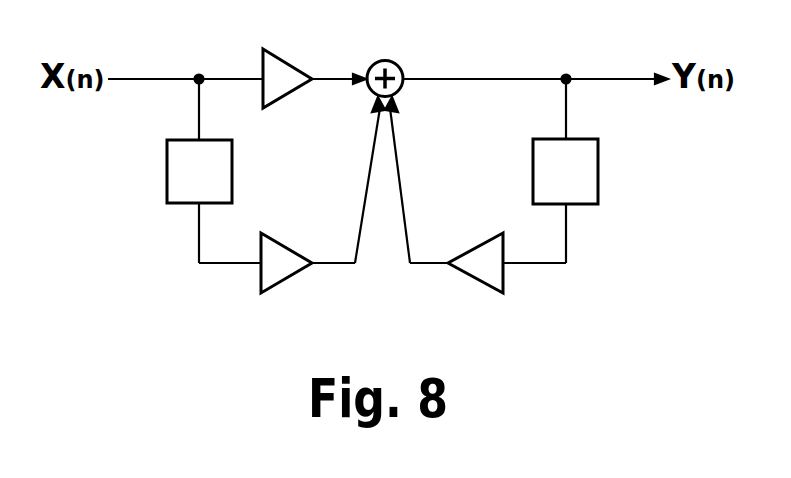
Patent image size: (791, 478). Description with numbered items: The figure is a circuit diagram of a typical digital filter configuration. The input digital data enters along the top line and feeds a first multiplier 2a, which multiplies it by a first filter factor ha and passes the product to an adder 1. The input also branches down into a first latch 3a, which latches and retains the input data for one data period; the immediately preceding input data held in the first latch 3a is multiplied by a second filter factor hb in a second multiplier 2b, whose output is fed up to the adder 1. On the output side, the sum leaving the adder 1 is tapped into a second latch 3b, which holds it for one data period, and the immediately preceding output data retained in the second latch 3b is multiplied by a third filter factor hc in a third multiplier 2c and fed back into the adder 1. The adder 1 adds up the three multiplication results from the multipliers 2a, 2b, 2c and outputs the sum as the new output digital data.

The adder 1 is at (394, 61).
The first multiplier 2a is at (279, 88).
The second multiplier 2b is at (284, 250).
The third multiplier 2c is at (486, 253).
The first latch 3a is at (232, 176).
The second latch 3b is at (598, 175).